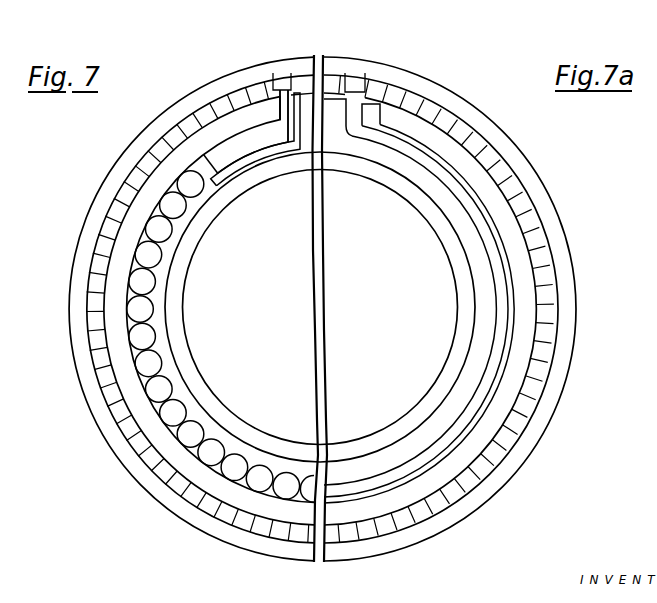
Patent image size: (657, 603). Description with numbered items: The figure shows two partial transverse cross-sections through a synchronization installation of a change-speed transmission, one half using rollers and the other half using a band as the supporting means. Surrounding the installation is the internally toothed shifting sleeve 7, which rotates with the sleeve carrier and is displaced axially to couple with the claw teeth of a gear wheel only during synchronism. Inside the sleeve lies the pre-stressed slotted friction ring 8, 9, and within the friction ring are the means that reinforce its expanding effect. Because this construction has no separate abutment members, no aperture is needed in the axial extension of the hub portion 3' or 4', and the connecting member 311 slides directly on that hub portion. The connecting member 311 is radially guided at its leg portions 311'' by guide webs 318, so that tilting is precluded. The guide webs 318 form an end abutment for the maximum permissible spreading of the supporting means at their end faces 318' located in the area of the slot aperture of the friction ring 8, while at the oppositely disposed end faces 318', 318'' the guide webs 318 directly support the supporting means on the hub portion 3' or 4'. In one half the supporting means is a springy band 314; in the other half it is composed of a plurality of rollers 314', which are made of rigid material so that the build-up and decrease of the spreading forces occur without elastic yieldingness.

In FIG. 7A, the shifting sleeve 7 is at (542, 218).
In FIG. 7A, the friction ring 8 is at (500, 400).
In FIG. 7, the friction ring 9 is at (112, 291).
In FIG. 7A, the hub portion 3' is at (397, 307).
In FIG. 7, the hub portion 4' is at (242, 307).
In FIG. 7A, the connecting member 311 is at (366, 86).
In FIG. 7, the leg portions 311'' is at (265, 155).
In FIG. 7A, the springy band 314 is at (452, 313).
In FIG. 7, the rollers 314' is at (216, 355).
In FIG. 7, the guide webs 318 is at (225, 113).
In FIG. 7A, the guide webs 318 is at (419, 290).
In FIG. 7, the end faces 318' is at (277, 83).
In FIG. 7A, the end faces 318' is at (412, 88).
In FIG. 7, the retaining ring end 318'' is at (149, 143).
In FIG. 7A, the retaining ring end 318'' is at (459, 314).